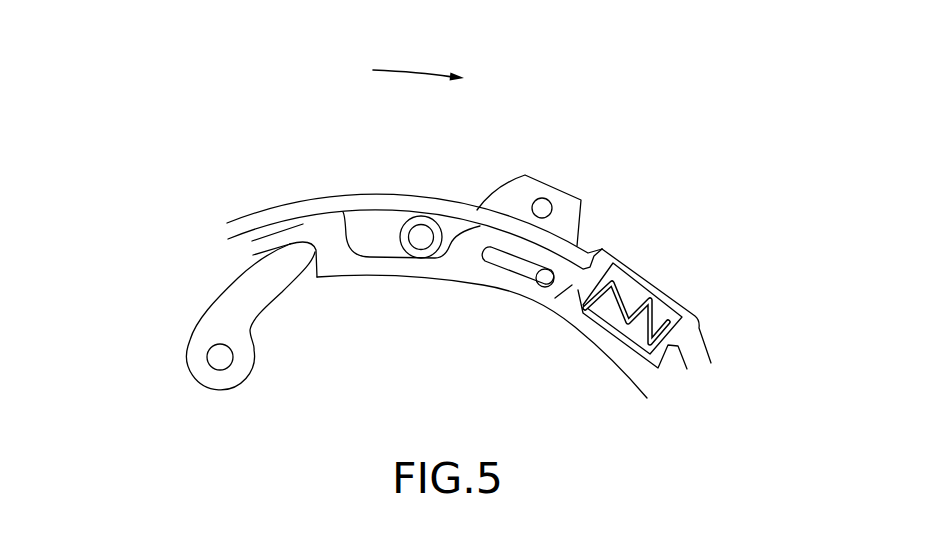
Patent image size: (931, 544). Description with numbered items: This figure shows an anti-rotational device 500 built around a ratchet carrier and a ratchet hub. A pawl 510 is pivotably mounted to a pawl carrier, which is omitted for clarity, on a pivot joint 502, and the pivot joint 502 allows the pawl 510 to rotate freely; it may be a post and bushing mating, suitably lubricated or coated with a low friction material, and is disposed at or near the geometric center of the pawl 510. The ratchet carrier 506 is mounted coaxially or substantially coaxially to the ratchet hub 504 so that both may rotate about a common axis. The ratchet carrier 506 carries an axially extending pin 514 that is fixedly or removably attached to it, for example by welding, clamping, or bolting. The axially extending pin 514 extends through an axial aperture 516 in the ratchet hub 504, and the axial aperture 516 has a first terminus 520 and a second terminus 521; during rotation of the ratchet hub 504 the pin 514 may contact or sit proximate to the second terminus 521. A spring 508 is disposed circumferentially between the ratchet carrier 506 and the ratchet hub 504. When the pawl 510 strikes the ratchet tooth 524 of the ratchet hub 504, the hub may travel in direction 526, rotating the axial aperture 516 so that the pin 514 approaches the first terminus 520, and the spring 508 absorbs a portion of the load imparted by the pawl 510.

The anti-rotational device 500 is at (158, 116).
The pivot joint 502 is at (215, 358).
The ratchet hub 504 is at (331, 252).
The ratchet carrier 506 is at (465, 205).
The spring 508 is at (638, 297).
The pawl 510 is at (250, 290).
The axially extending pin 514 is at (550, 295).
The axial aperture 516 is at (465, 289).
The first terminus 520 is at (484, 256).
The second terminus 521 is at (550, 295).
The ratchet tooth 524 is at (316, 256).
The direction 526 is at (400, 70).